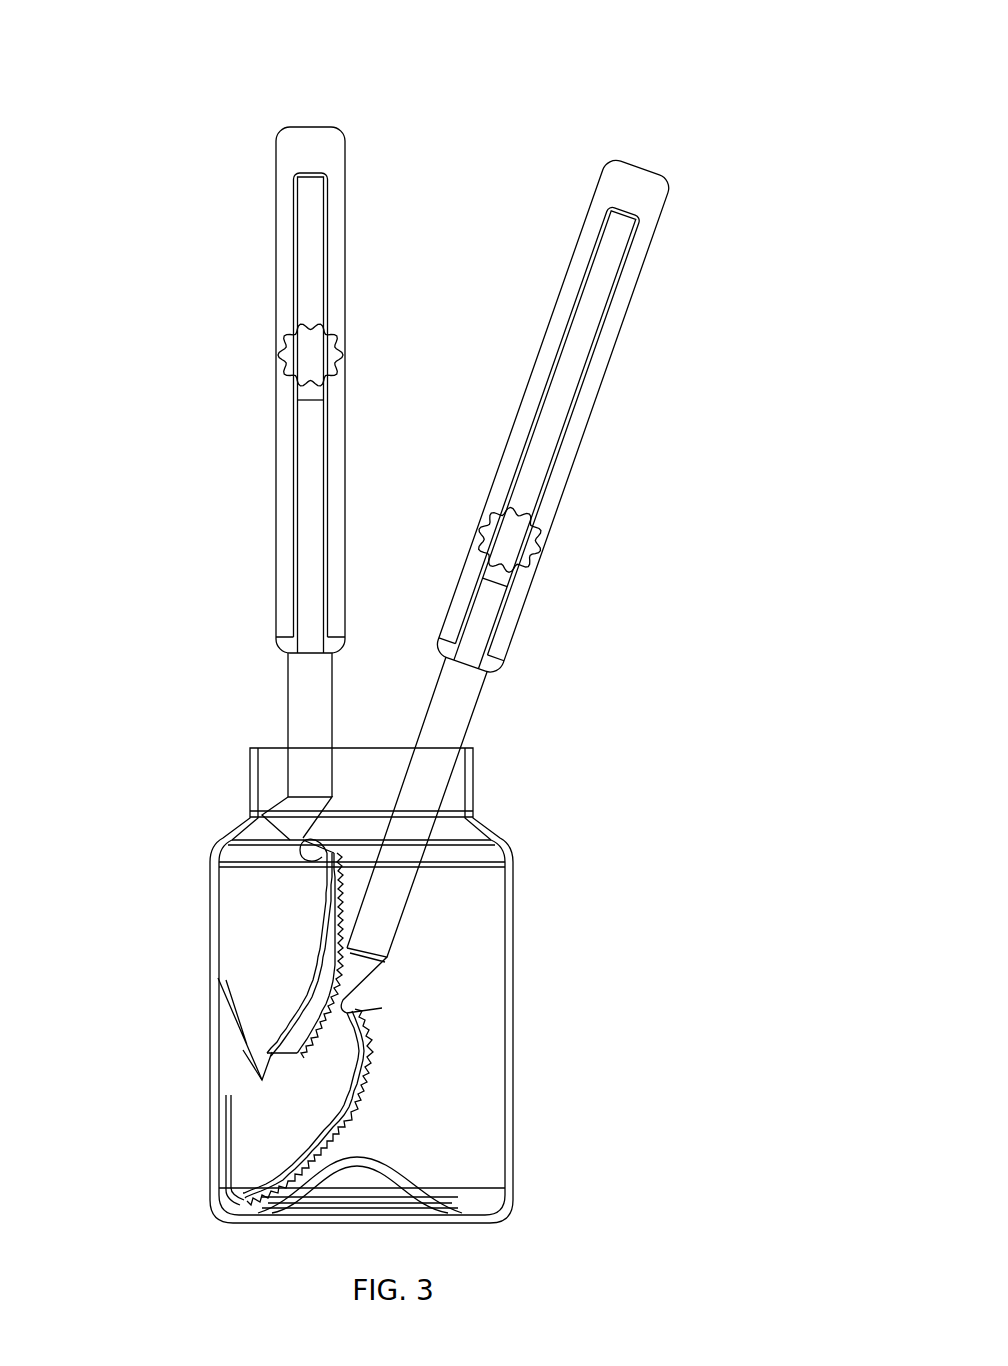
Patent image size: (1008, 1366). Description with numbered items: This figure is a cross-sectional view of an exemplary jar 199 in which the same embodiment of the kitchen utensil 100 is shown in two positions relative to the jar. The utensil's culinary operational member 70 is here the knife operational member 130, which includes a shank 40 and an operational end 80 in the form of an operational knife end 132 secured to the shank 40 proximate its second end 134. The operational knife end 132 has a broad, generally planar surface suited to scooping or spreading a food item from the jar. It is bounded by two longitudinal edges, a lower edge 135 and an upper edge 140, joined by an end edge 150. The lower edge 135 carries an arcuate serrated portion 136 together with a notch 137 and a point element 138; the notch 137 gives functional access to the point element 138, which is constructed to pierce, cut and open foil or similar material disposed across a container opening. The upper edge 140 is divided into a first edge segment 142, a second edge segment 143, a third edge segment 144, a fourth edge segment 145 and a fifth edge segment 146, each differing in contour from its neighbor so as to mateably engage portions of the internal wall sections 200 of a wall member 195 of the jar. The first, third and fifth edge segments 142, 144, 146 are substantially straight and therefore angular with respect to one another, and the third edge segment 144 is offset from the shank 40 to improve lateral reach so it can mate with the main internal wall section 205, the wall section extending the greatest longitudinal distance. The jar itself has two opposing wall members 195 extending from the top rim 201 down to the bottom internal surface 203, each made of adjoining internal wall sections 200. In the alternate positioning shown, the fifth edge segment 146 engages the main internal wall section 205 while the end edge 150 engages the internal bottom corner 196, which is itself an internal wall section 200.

The kitchen utensil 100 is at (275, 88).
The culinary operational member 70 is at (270, 702).
The knife operational member 130 is at (272, 688).
The top rim 201 is at (347, 748).
The shank 40 is at (465, 702).
The internal wall section 200 is at (468, 773).
The wall member 195 is at (250, 746).
The first edge segment 142 is at (245, 830).
The second edge segment 143 is at (222, 850).
The third edge segment 144 is at (220, 932).
The fourth edge segment 145 is at (222, 982).
The exemplary jar 199 is at (512, 1178).
The main internal wall section 205 is at (245, 1077).
The internal bottom corner 196 is at (497, 1205).
The bottom internal surface 203 is at (468, 1213).
The operational knife end 132 is at (230, 897).
The notch 137 is at (325, 835).
The point element 138 is at (340, 847).
The fifth edge segment 146 is at (233, 1015).
The upper edge 140 is at (262, 1085).
The end edge 150 is at (240, 1140).
The second end of shank 134 is at (363, 950).
The lower edge 135 is at (380, 1017).
The operational end 80 is at (333, 1058).
The serrated portion 136 is at (367, 1092).